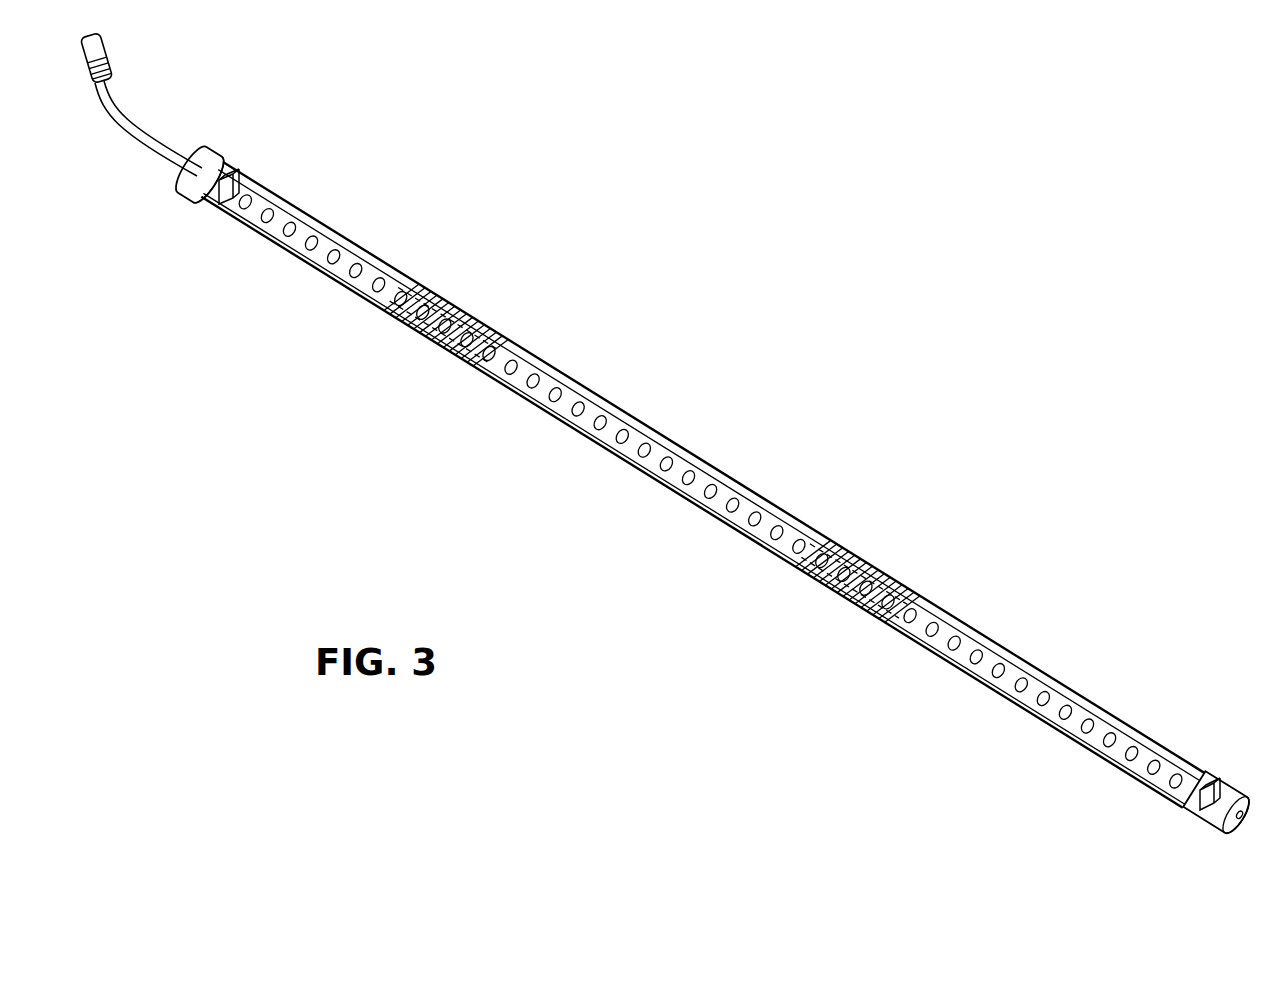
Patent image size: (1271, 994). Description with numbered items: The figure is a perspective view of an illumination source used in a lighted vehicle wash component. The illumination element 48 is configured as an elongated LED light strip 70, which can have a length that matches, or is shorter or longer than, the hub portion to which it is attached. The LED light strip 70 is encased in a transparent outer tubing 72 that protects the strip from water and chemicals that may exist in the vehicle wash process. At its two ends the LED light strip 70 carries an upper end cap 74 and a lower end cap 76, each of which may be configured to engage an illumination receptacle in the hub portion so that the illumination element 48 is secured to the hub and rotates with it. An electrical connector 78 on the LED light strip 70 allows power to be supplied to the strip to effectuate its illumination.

The illumination element 48 is at (478, 190).
The LED light strip 70 is at (503, 336).
The transparent outer tubing 72 is at (710, 460).
The upper end cap 74 is at (197, 182).
The lower end cap 76 is at (1234, 834).
The electrical connector 78 is at (103, 40).